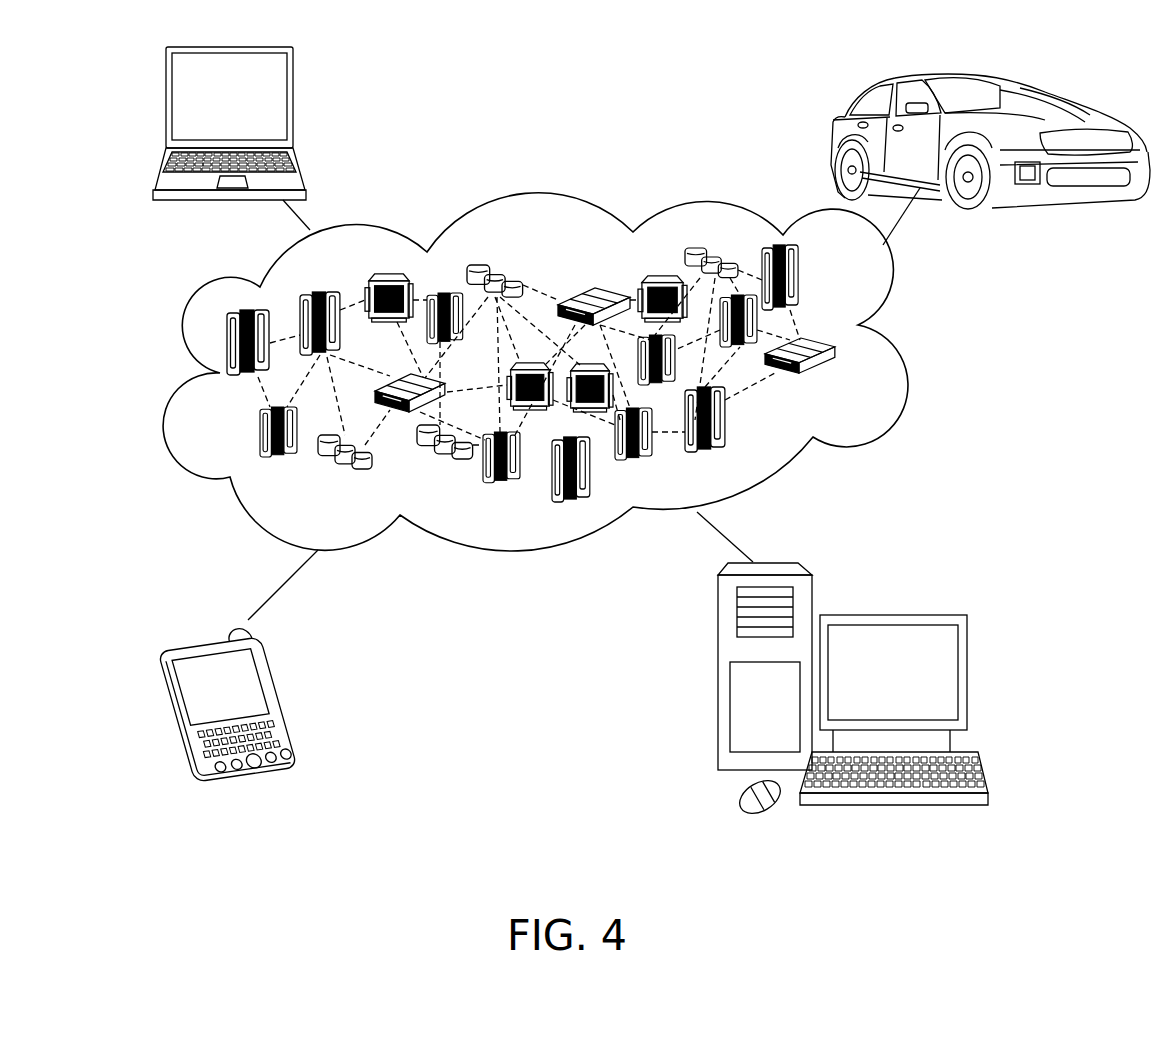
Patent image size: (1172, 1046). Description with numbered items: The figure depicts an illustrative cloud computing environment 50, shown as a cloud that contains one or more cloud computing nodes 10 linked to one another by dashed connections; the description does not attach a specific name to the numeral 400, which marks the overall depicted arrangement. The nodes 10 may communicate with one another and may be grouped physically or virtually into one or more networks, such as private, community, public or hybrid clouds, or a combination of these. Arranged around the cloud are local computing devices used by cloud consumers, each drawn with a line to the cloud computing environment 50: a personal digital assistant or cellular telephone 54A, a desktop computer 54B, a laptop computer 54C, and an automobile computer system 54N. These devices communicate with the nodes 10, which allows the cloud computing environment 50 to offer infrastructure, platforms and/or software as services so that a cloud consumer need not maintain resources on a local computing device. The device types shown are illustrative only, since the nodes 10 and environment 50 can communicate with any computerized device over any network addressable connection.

The cloud computing environment 400 is at (233, 827).
The cloud computing environment 50 is at (908, 363).
The cloud computing nodes 10 is at (851, 379).
The personal digital assistant (PDA) or cellular telephone 54A is at (278, 698).
The desktop computer 54B is at (927, 613).
The laptop computer 54C is at (293, 118).
The automobile computer system 54N is at (1047, 100).